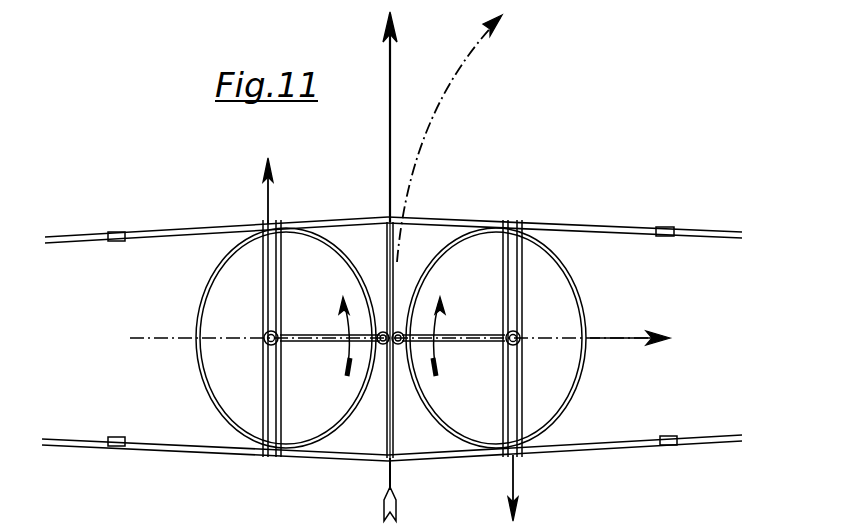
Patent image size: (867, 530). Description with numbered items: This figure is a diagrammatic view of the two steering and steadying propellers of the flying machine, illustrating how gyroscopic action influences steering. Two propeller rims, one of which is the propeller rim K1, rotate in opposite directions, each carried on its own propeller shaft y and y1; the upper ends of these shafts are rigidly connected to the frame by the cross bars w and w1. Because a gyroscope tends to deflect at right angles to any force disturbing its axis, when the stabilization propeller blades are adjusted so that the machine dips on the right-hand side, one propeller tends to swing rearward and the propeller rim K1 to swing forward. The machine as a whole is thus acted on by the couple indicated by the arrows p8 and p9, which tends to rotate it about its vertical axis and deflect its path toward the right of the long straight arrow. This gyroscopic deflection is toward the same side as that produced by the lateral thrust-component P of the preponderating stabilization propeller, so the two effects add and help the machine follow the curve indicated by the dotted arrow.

The propeller rim K1 is at (200, 306).
The cross bar w1 is at (270, 383).
The cross bar w is at (510, 388).
The propeller shaft y1 is at (321, 343).
The propeller shaft y is at (470, 343).
The lateral thrust-component P is at (630, 322).
The arrow of gyroscopic couple p9 is at (251, 191).
The arrow of gyroscopic couple p8 is at (533, 488).